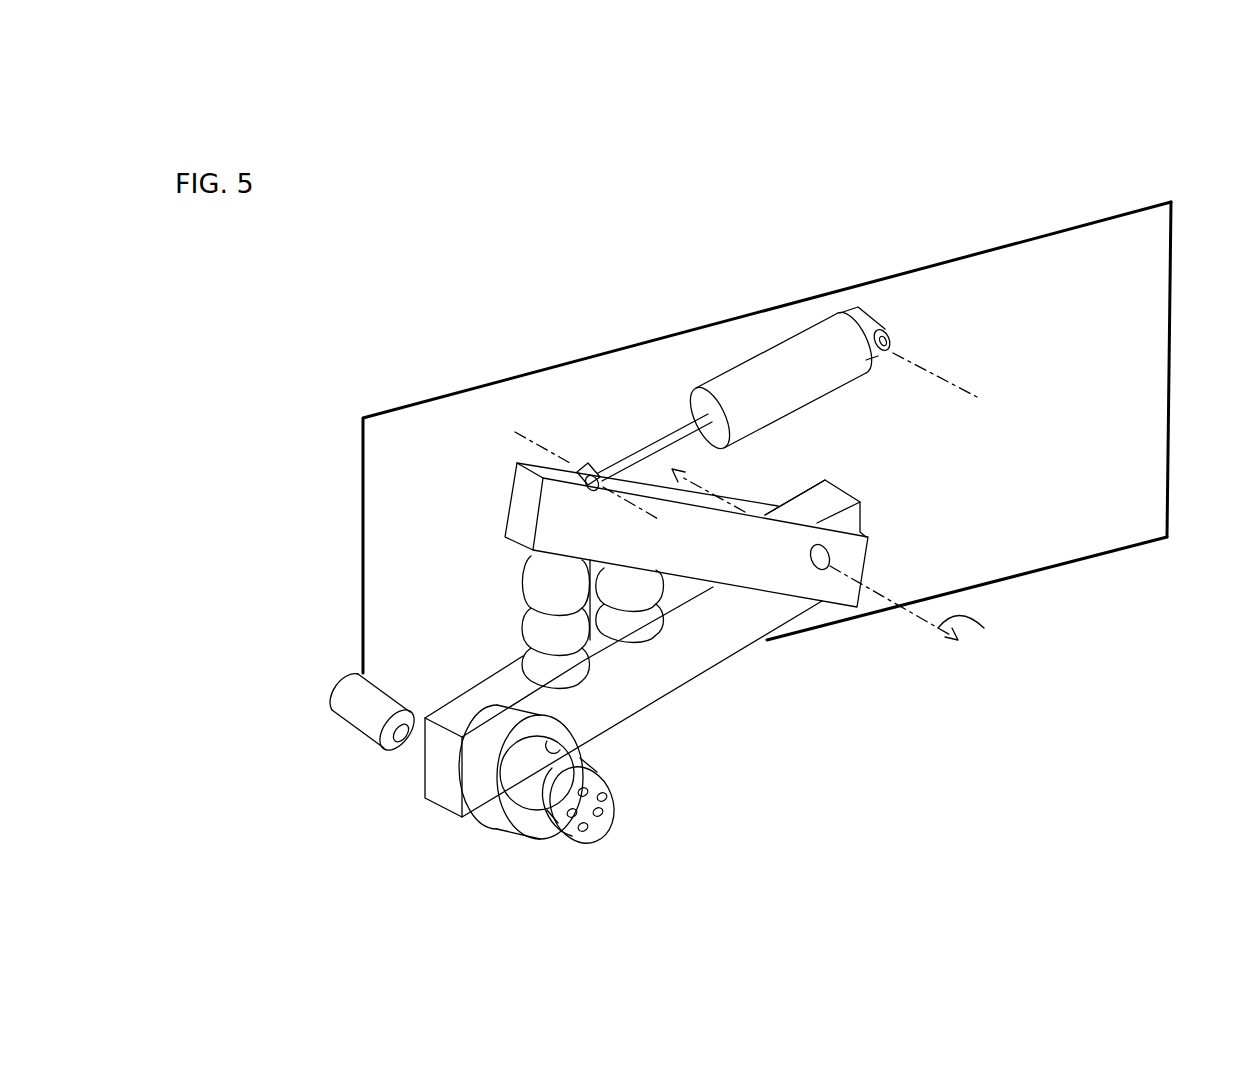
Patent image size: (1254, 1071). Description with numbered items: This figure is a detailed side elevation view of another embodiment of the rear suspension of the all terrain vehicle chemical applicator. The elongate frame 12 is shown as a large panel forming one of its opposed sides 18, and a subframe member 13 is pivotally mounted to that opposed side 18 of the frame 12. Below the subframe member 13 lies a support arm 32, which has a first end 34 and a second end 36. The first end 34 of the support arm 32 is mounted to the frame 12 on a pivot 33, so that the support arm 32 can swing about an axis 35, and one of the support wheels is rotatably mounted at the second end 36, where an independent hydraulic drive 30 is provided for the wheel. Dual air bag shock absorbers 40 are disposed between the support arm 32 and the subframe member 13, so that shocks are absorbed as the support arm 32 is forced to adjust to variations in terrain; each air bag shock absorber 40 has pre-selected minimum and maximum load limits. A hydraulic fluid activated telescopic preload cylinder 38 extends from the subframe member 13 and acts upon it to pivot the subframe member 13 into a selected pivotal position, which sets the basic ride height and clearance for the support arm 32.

The elongate frame 12 is at (1085, 257).
The subframe member 13 is at (555, 497).
The opposed side 18 is at (1173, 300).
The independent hydraulic drive 30 is at (352, 715).
The support arm 32 is at (670, 673).
The pivot 33 is at (828, 567).
The first end 34 is at (862, 513).
The axis 35 is at (925, 616).
The second end 36 is at (502, 802).
The hydraulic fluid activated telescopic preload cylinder 38 is at (771, 372).
The air bag shock absorber 40 is at (632, 613).